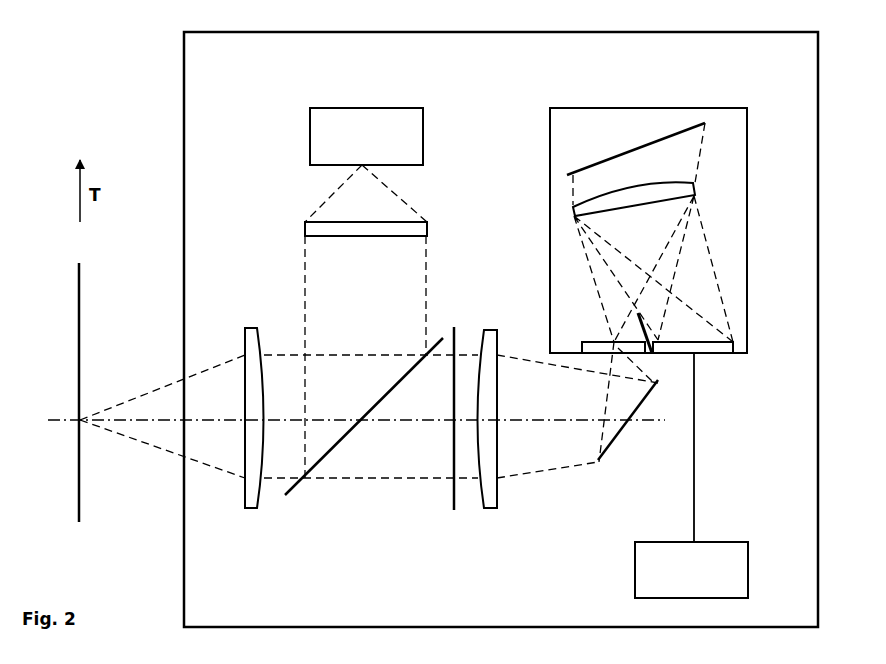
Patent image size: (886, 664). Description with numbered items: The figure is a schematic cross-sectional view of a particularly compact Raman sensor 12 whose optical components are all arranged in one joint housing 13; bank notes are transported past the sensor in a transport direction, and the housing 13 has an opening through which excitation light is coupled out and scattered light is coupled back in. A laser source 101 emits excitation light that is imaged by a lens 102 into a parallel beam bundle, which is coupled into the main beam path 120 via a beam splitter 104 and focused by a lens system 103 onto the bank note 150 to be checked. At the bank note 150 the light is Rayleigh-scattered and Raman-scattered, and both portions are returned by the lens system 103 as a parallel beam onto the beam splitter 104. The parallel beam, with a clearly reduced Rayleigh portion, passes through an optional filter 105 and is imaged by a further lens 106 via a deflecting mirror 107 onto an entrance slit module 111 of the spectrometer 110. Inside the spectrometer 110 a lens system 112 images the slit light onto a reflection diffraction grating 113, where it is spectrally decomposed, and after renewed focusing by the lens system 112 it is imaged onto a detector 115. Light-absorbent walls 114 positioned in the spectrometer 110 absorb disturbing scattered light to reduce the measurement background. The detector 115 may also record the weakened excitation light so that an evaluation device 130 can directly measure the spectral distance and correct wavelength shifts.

The Raman sensor 12 is at (150, 100).
The housing 13 is at (192, 551).
The laser source 101 is at (331, 117).
The lens 102 is at (305, 228).
The lens system 103 is at (246, 510).
The beam splitter 104 is at (293, 490).
The filter 105 is at (455, 512).
The lens 106 is at (493, 492).
The deflecting mirror 107 is at (607, 450).
The spectrometer 110 is at (637, 112).
The entrance slit module 111 is at (580, 346).
The lens system 112 is at (695, 193).
The reflection diffraction grating 113 is at (586, 170).
The light-absorbent wall 114 is at (637, 327).
The detector 115 is at (706, 354).
The main beam path 120 is at (647, 423).
The evaluation device 130 is at (738, 562).
The bank note 150 is at (82, 329).